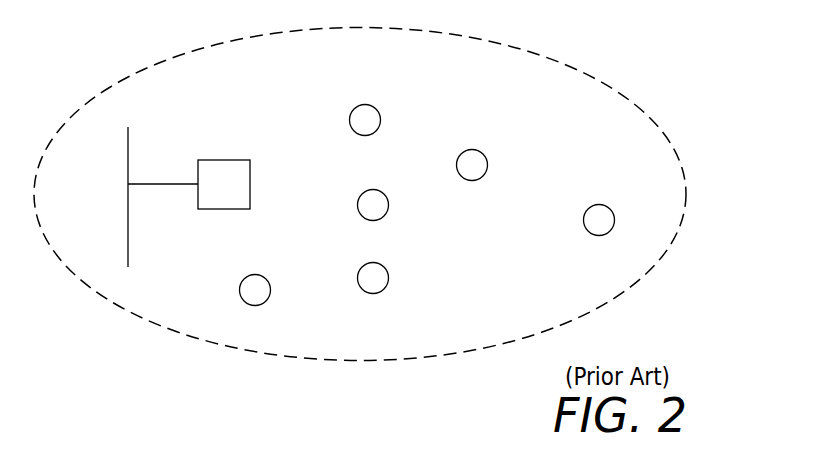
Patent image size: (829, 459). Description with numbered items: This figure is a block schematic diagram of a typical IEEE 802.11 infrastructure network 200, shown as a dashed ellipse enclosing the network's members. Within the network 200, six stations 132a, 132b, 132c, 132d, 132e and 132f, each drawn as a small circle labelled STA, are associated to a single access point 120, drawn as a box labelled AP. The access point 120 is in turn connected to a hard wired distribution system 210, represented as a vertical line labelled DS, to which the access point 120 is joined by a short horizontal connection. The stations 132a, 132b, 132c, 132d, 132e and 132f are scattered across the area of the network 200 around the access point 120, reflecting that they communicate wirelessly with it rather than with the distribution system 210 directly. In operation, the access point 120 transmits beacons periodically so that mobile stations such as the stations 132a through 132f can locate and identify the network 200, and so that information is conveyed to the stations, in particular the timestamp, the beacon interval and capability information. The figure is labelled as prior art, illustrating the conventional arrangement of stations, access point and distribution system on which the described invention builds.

The infrastructure network 200 is at (648, 73).
The distribution system 210 is at (128, 167).
The access point 120 is at (208, 160).
The station 132a is at (246, 276).
The station 132b is at (359, 106).
The station 132c is at (367, 191).
The station 132d is at (367, 264).
The station 132e is at (465, 151).
The station 132f is at (592, 206).